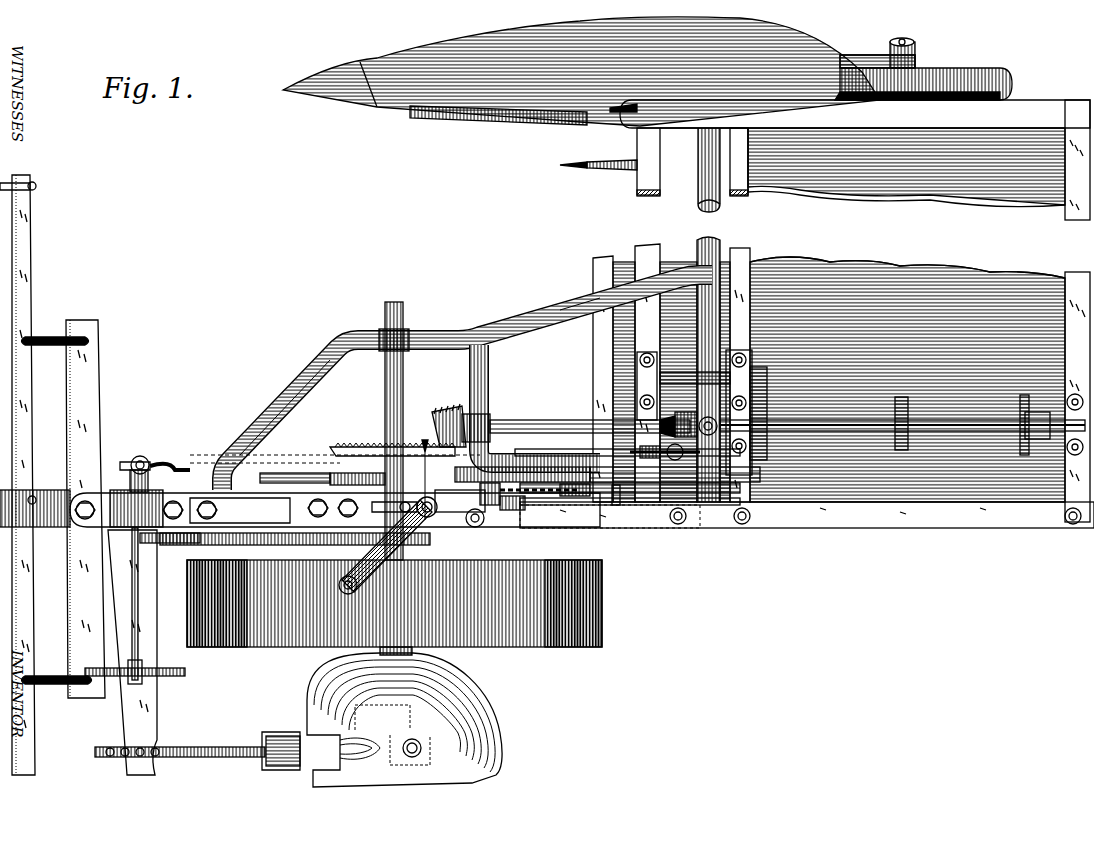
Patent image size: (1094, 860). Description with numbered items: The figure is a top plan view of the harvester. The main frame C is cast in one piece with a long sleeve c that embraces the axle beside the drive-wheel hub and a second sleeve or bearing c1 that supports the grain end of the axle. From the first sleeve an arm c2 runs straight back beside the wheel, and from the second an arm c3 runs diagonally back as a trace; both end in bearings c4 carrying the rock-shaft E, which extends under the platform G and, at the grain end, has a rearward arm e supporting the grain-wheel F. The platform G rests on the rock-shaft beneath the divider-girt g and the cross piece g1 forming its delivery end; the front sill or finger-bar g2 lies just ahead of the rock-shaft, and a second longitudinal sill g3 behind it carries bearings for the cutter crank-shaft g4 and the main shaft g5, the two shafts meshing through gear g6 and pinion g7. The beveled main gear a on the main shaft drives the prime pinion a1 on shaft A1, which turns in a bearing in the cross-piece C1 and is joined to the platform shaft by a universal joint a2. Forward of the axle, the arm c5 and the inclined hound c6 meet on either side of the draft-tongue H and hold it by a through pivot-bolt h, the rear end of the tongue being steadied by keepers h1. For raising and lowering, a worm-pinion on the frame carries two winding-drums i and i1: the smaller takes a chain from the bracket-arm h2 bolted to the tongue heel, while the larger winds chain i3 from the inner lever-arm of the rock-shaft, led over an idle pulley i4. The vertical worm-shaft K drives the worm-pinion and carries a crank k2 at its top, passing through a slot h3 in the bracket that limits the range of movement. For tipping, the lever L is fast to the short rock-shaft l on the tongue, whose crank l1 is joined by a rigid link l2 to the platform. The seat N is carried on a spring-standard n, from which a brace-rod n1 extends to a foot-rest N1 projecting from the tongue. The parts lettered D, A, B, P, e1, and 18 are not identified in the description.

The hull D is at (581, 71).
The grain-wheel F is at (980, 80).
The rearwardly-extending arm e is at (880, 50).
The platform G is at (825, 311).
The divider-girt g is at (709, 159).
The cross piece or timber g1 is at (807, 515).
The front sill or finger-bar g2 is at (613, 364).
The bearings c4 is at (662, 370).
The rock-shaft E is at (708, 360).
The longitudinal sill g3 is at (755, 366).
The main frame C is at (467, 382).
The second arm c6 is at (285, 404).
The arm c3 is at (576, 290).
The cross-piece C1 is at (539, 404).
The second sleeve or bearing c1 is at (404, 328).
The shaft A is at (403, 431).
The beveled pinion a1 is at (461, 413).
The beveled gear-wheel a is at (392, 441).
The vertical worm-shaft K is at (416, 470).
The shaft A1 is at (590, 413).
The universal joint a2 is at (690, 424).
The gear g6 is at (902, 415).
The pinion g7 is at (774, 406).
The main shaft g5 is at (974, 423).
The cutter crank-shaft g4 is at (694, 410).
The link 18 is at (681, 451).
The rigid link l2 is at (465, 447).
The through pivot-bolt h is at (607, 474).
The long sleeve c is at (630, 493).
The rod e1 is at (648, 500).
The chain i3 is at (550, 494).
The idle or guide pulley i4 is at (577, 505).
The winding-drum i is at (505, 525).
The winding-drum i1 is at (515, 512).
The bracket-arm h2 is at (470, 525).
The longitudinal slot h3 is at (438, 518).
The vertical guides or keepers h1 is at (330, 486).
The draft-tongue H is at (300, 516).
The arm c5 is at (295, 531).
The roller B is at (394, 603).
The arm c2 is at (387, 546).
The crank k2 is at (340, 548).
The short lateral arm or crank l1 is at (134, 462).
The short rock-shaft l is at (141, 604).
The lever L is at (150, 670).
The foot-rest N1 is at (147, 652).
The standard P is at (52, 475).
The seat N is at (404, 717).
The spring-standard n is at (290, 732).
The brace-rod n1 is at (180, 740).